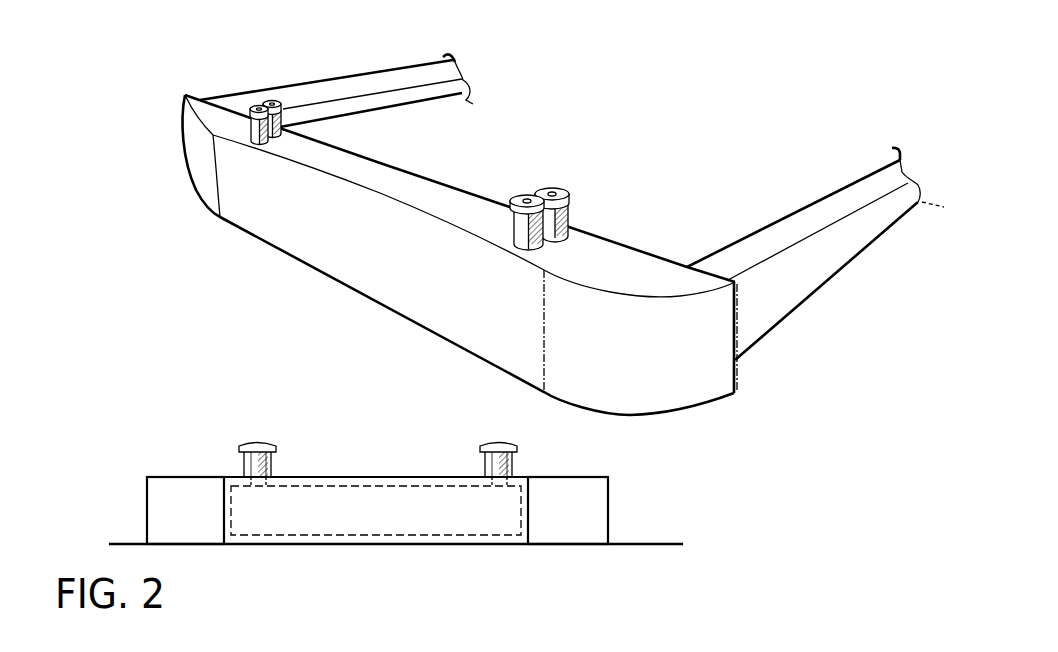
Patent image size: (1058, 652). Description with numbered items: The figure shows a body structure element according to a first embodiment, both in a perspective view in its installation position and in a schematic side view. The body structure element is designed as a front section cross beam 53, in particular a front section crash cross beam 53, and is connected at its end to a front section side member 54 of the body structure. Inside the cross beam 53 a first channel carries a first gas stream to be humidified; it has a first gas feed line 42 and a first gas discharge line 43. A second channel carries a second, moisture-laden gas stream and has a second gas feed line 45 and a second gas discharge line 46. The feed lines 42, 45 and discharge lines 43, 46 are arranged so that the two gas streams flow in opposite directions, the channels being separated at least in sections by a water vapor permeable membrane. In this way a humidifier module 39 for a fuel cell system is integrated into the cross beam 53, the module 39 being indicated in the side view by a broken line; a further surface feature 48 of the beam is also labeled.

The humidifier module 39 is at (327, 485).
The first gas feed line 42 is at (279, 100).
The first gas discharge line 43 is at (572, 197).
The second gas feed line 45 is at (523, 192).
The second gas discharge line 46 is at (252, 101).
The top surface of bumper body 48 is at (409, 180).
The front section cross beam 53 is at (314, 271).
The front section side member 54 is at (400, 67).